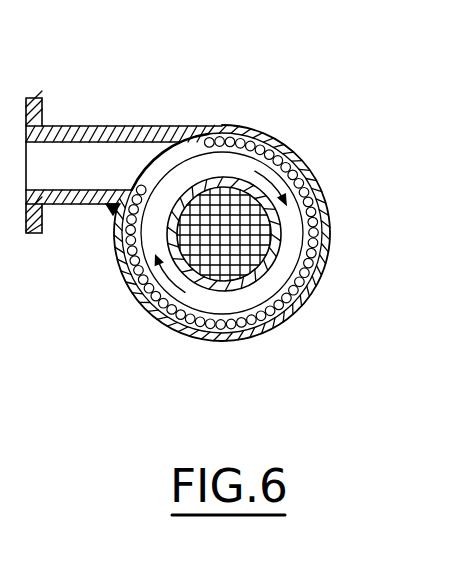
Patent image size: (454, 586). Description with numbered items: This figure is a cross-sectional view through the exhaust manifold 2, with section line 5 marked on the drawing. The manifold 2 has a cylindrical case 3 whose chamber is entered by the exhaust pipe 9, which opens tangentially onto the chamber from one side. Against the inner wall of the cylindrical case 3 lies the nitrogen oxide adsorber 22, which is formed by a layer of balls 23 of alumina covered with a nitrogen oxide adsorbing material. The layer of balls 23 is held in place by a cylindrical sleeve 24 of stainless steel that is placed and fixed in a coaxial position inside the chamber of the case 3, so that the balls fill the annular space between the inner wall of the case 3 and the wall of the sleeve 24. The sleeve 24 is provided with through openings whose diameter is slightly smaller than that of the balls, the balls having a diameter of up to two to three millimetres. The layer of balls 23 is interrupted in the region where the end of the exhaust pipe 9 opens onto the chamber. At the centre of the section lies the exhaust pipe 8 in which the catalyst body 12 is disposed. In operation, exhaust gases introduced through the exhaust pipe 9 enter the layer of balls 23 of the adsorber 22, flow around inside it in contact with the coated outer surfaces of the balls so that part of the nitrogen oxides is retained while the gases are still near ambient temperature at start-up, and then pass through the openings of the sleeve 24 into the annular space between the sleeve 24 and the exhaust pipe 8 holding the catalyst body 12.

The exhaust manifold 2 is at (98, 112).
The cylindrical case 3 is at (307, 162).
The section line 5- 5 is at (223, 75).
The exhaust pipe 8 is at (262, 279).
The exhaust pipe 9 is at (67, 196).
The catalyst body 12 is at (272, 236).
The nitrogen oxide adsorber 22 is at (331, 187).
The layer of balls 23 is at (322, 260).
The cylindrical sleeve 24 is at (320, 287).